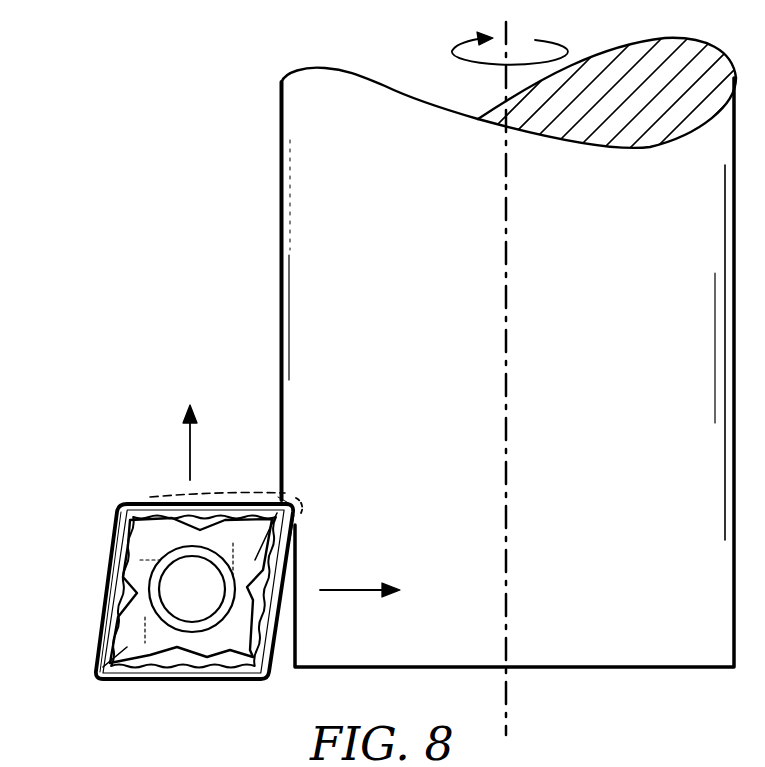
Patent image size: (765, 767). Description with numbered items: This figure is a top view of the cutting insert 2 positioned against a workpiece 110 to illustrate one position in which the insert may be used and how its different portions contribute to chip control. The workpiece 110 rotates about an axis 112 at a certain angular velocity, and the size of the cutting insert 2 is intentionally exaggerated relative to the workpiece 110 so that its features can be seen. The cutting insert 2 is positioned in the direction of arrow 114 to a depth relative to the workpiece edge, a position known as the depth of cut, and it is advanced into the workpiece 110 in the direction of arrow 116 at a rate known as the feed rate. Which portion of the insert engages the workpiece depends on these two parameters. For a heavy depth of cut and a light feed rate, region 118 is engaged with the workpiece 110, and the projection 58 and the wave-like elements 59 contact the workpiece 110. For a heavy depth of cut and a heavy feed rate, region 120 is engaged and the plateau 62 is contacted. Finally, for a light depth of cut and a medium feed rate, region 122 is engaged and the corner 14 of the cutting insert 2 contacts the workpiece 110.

The cutting insert 2 is at (211, 564).
The corner 14 is at (308, 490).
The projection 58 is at (183, 506).
The wave-like elements 59 is at (197, 506).
The plateau 62 is at (114, 550).
The workpiece 110 is at (266, 295).
The axis 112 is at (505, 175).
The arrow 114 is at (350, 593).
The arrow 116 is at (190, 454).
The region 118 is at (150, 506).
The region 120 is at (297, 544).
The region 122 is at (305, 510).